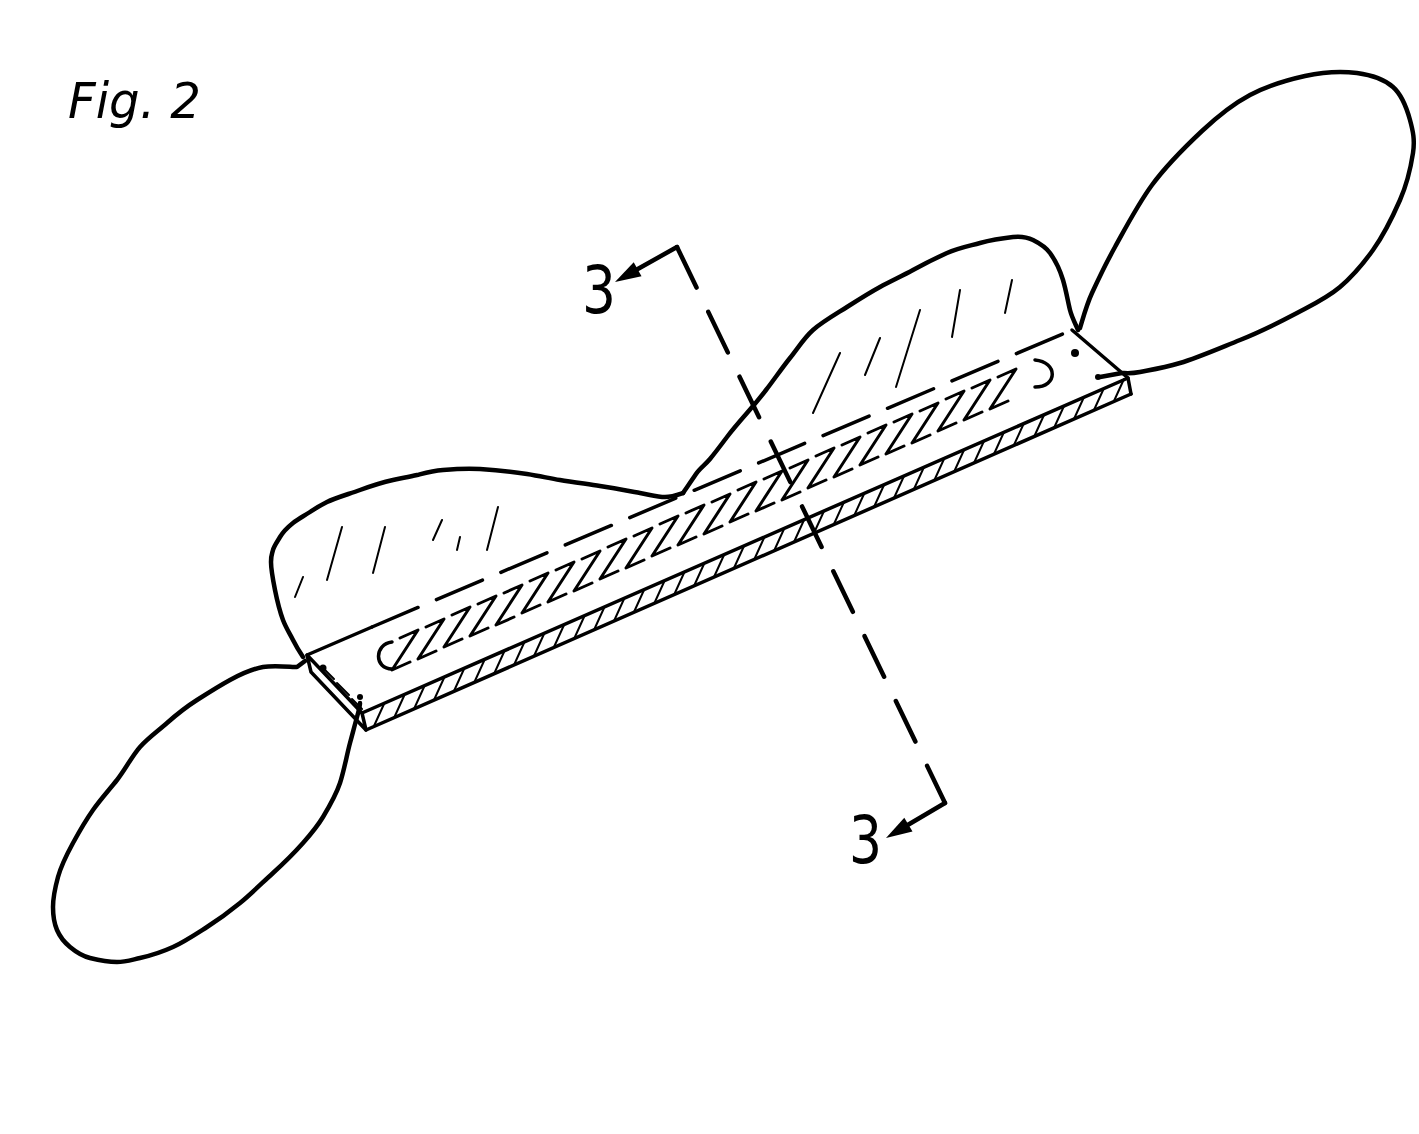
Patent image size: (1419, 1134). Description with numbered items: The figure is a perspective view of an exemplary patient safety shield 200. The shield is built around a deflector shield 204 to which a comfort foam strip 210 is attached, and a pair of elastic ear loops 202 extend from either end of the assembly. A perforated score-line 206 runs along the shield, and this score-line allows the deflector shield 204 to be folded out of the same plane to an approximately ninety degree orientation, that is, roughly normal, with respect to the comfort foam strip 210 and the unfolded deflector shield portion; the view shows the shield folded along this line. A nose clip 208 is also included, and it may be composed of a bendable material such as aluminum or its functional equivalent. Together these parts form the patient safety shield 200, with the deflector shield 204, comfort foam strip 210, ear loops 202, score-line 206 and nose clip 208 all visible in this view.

The patient safety shield 200 is at (678, 190).
The elastic ear loops 202 is at (117, 780).
The deflector shield 204 is at (418, 473).
The perforated score-line 206 is at (392, 620).
The nose clip 208 is at (720, 532).
The comfort foam strip 210 is at (982, 460).